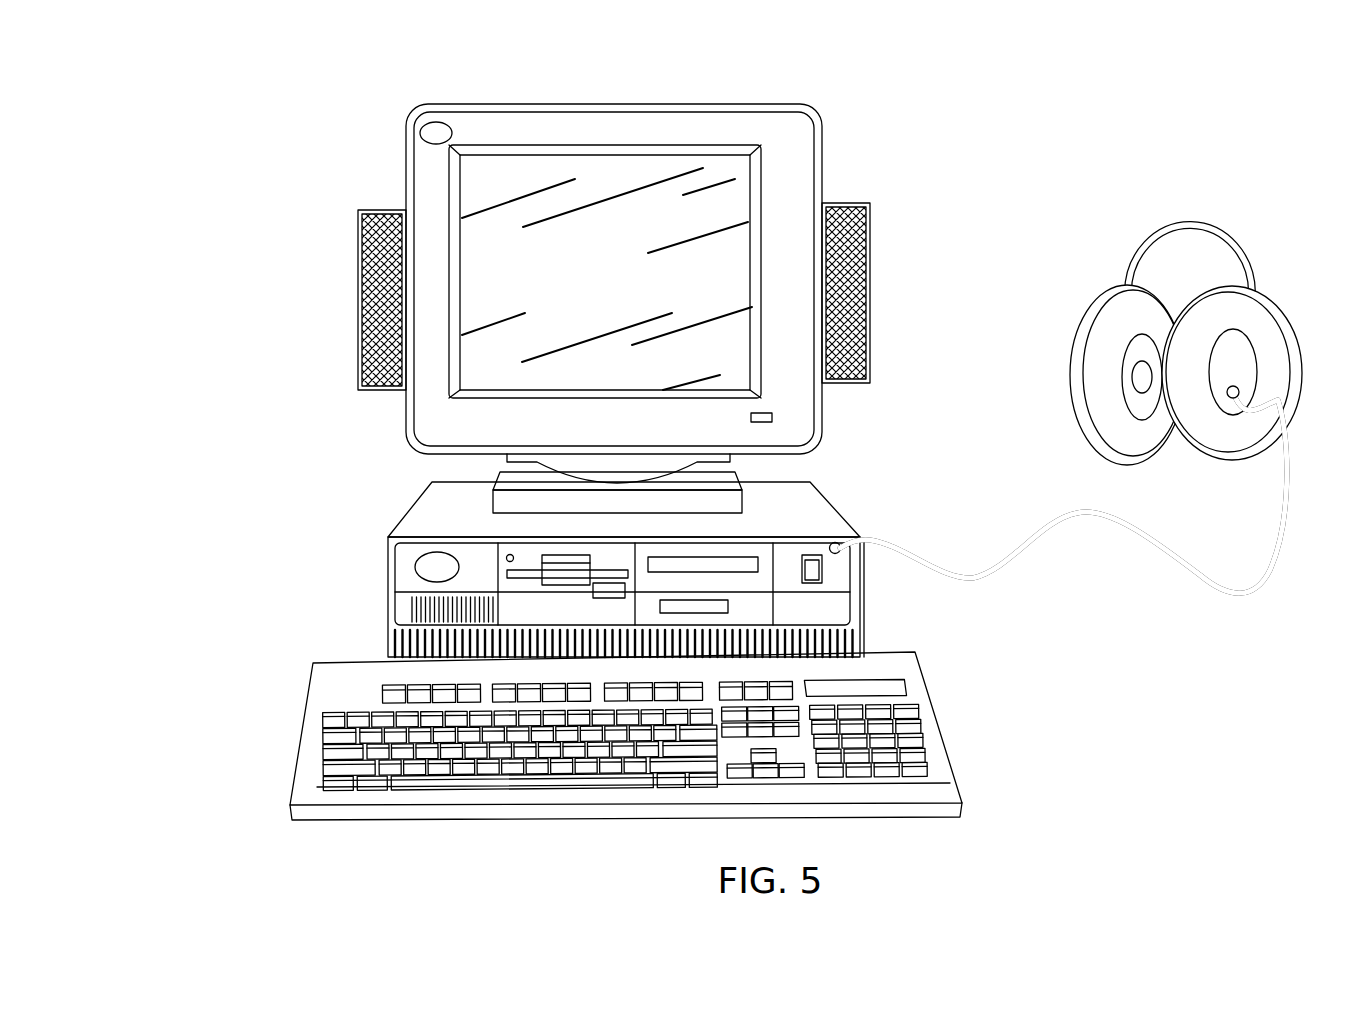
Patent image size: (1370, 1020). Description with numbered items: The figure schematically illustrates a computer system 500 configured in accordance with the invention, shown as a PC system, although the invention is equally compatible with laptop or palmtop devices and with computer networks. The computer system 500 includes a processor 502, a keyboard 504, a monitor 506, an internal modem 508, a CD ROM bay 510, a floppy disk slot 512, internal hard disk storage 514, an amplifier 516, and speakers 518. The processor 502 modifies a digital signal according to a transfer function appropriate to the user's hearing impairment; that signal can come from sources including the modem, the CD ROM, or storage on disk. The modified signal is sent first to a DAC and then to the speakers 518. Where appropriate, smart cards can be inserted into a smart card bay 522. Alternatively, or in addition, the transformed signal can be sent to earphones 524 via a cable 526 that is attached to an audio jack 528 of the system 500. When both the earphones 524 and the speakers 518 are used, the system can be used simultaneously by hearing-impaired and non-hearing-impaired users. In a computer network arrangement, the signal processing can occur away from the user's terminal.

The computer system 500 is at (433, 70).
The processor 502 is at (363, 552).
The keyboard 504 is at (308, 728).
The monitor 506 is at (817, 113).
The internal modem 508 is at (377, 487).
The CD ROM bay 510 is at (738, 563).
The floppy disk slot 512 is at (563, 573).
The internal hard disk storage 514 is at (902, 502).
The amplifier 516 is at (938, 518).
The speakers 518 is at (360, 283).
The smart card bay 522 is at (717, 607).
The earphones 524 is at (1270, 315).
The cable 526 is at (1197, 587).
The audio jack 528 is at (862, 572).